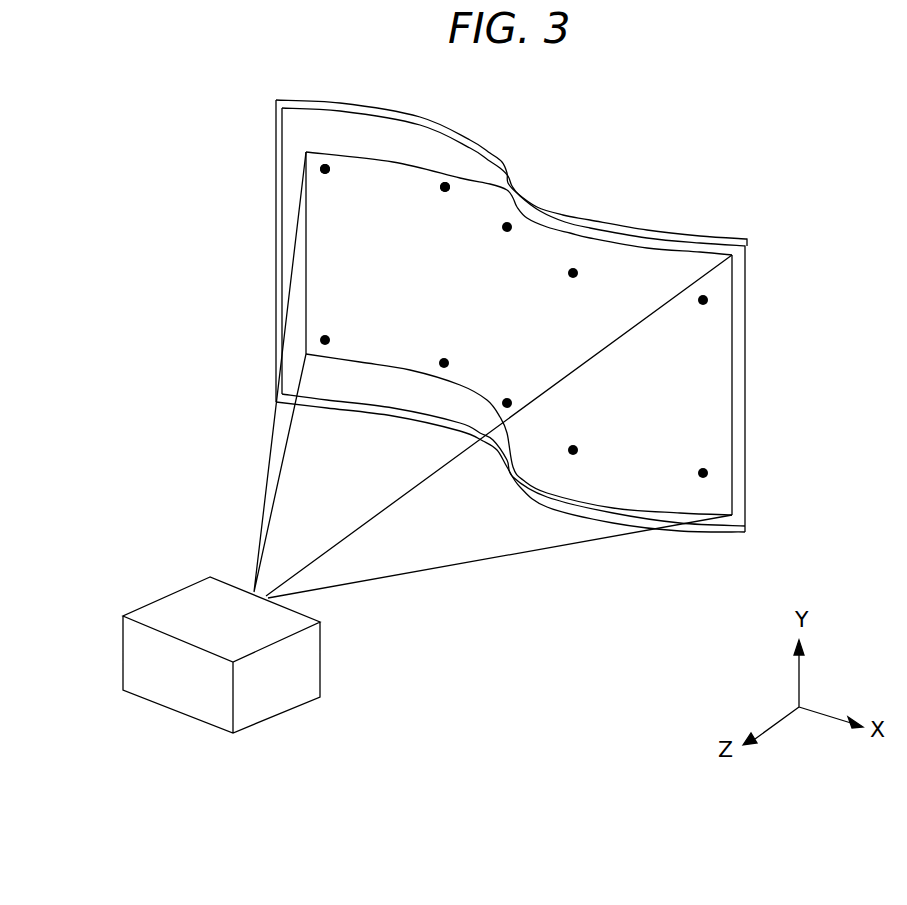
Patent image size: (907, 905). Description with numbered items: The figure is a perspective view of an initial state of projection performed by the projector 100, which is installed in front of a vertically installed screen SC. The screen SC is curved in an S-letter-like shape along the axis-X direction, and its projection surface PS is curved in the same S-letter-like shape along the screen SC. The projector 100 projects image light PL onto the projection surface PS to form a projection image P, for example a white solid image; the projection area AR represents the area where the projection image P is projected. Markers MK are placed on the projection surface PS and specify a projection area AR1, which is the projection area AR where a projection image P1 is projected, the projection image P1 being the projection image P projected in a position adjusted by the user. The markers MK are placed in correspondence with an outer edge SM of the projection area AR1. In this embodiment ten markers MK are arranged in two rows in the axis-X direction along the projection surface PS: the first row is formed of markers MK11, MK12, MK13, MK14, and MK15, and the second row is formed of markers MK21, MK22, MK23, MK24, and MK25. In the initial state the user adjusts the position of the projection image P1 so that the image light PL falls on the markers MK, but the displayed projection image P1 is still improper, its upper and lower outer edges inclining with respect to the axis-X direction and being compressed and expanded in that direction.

The outer edge of the projection area SM is at (417, 163).
The projection surface PS is at (467, 155).
The screen SC is at (537, 200).
The projection image P1 is at (640, 216).
The projection image P is at (567, 255).
The projection area AR1 is at (594, 329).
The projection area AR is at (698, 395).
The image light PL is at (457, 567).
The projector 100 is at (263, 698).
The markers MK is at (442, 192).
The marker MK11 is at (326, 164).
The marker MK12 is at (445, 192).
The marker MK13 is at (507, 232).
The marker MK14 is at (573, 278).
The marker MK15 is at (701, 305).
The marker MK21 is at (326, 335).
The marker MK22 is at (445, 358).
The marker MK23 is at (508, 398).
The marker MK24 is at (574, 445).
The marker MK25 is at (702, 468).